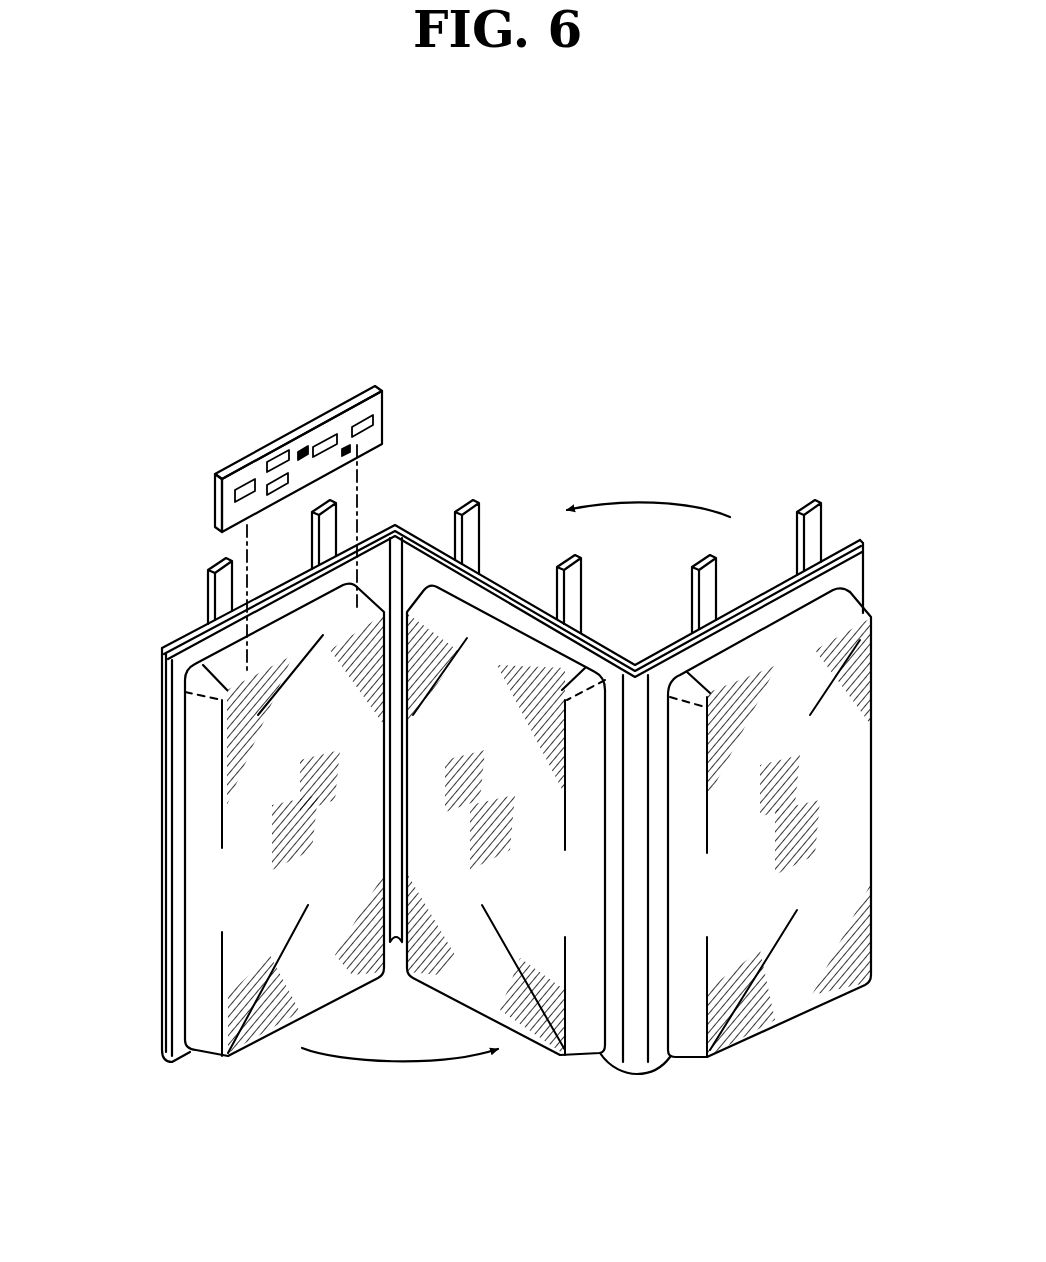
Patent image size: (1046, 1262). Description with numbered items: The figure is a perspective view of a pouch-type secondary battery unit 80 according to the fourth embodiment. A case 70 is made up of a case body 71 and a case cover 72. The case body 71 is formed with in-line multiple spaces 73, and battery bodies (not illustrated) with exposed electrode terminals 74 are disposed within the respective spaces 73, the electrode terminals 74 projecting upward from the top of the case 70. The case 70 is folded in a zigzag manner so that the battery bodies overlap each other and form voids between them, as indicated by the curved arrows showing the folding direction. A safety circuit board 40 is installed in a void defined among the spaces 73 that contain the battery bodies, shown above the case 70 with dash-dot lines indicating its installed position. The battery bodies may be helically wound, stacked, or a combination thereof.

The pouch-type secondary battery unit 80 is at (328, 294).
The safety circuit board 40 is at (397, 395).
The case 70 is at (146, 992).
The case body 71 is at (178, 920).
The case cover 72 is at (166, 838).
The spaces 73 is at (200, 758).
The electrode terminals 74 is at (194, 558).